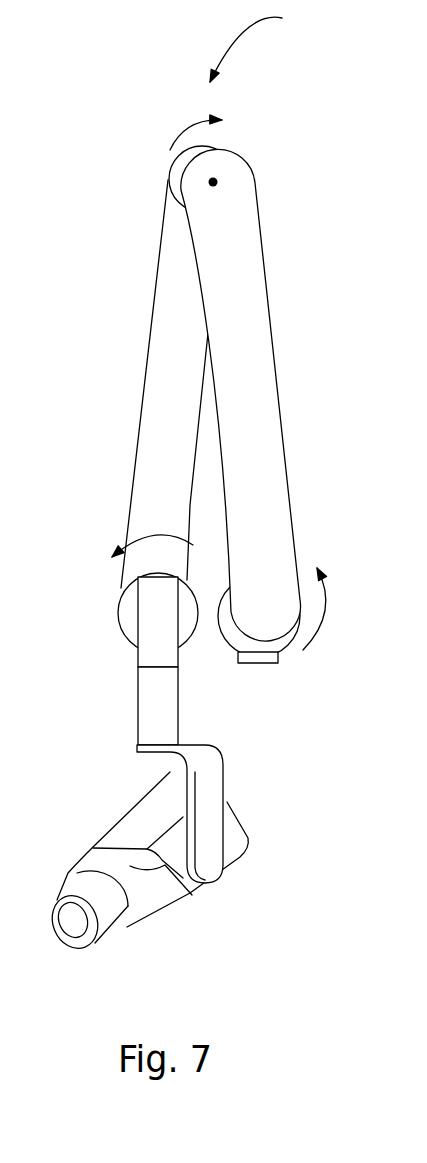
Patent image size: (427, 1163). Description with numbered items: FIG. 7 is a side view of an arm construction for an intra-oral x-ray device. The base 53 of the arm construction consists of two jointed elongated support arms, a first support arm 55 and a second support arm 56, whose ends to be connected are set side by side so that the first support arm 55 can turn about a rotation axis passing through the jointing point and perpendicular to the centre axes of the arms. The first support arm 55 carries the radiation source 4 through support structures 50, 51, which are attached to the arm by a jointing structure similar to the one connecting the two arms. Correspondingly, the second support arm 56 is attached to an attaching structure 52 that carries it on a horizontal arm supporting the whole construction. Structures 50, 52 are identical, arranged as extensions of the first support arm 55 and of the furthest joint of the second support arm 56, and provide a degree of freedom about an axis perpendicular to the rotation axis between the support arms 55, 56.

The radiation source 4 is at (147, 927).
The support structure 50 is at (138, 662).
The support structure 51 is at (137, 717).
The attaching structure 52 is at (278, 662).
The base 53 is at (264, 43).
The first support arm 55 is at (143, 373).
The second support arm 56 is at (268, 322).